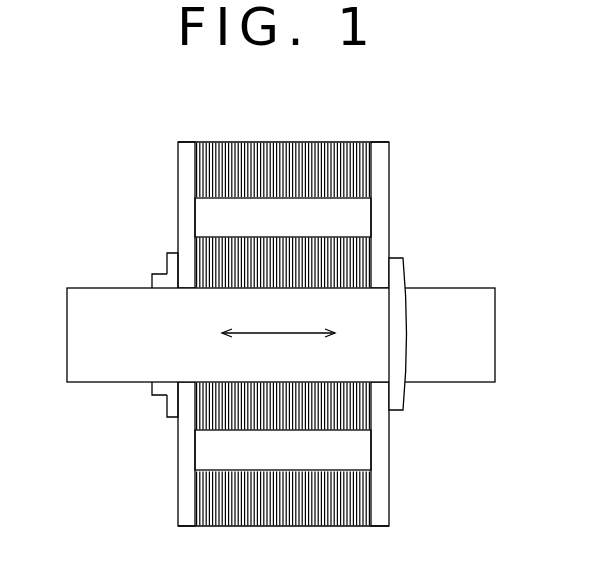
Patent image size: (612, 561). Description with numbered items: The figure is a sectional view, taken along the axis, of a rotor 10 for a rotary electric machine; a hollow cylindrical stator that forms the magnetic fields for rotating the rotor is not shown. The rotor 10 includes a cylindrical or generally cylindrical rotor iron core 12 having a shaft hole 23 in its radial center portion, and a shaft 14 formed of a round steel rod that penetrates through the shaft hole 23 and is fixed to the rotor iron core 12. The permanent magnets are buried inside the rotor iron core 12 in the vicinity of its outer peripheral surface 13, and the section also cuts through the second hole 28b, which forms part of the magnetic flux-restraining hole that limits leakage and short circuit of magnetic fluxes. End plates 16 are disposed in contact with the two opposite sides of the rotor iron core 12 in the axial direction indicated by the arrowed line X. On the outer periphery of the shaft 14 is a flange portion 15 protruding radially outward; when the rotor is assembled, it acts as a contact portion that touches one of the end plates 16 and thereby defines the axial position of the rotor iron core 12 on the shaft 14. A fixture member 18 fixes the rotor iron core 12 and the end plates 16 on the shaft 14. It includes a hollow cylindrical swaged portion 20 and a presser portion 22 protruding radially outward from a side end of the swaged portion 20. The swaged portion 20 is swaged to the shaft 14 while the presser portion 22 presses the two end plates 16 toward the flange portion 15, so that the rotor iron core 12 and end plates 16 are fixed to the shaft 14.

The rotor 10 is at (425, 96).
The rotor iron core 12 is at (279, 140).
The outer peripheral surface 13 is at (323, 142).
The shaft 14 is at (463, 285).
The flange portion 15 is at (397, 258).
The end plates 16 is at (178, 162).
The fixture member 18 is at (232, 298).
The swaged portion 20 is at (166, 273).
The presser portion 22 is at (162, 251).
The shaft hole 23 is at (218, 288).
The second hole 28b is at (283, 334).